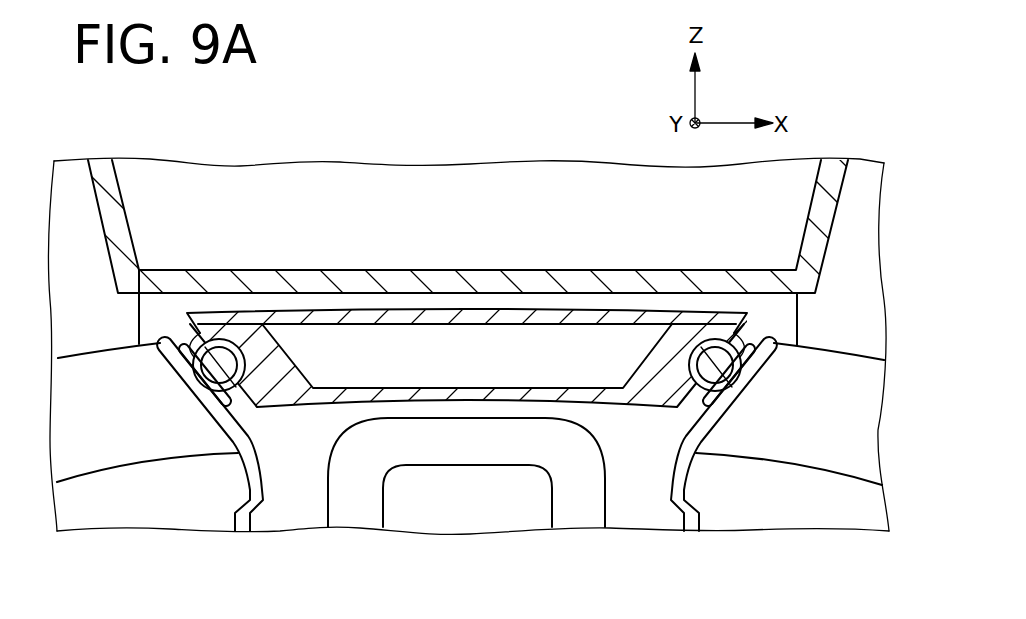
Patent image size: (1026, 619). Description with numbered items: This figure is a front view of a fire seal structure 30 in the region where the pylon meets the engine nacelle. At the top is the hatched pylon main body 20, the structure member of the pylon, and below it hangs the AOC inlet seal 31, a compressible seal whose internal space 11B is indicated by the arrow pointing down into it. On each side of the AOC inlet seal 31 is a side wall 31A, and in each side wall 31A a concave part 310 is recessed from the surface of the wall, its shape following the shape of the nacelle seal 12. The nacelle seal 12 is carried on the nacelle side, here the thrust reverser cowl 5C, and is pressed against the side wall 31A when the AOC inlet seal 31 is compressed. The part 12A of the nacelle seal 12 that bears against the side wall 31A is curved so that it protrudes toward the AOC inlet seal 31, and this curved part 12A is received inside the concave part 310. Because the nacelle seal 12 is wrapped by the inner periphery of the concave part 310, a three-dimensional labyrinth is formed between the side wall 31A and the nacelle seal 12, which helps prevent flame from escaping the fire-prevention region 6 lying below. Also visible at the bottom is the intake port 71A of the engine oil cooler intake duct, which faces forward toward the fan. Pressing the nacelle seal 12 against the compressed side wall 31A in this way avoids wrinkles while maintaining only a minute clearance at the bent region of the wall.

The pylon main body 20 is at (844, 198).
The AOC inlet seal 31 is at (614, 307).
The side wall 31A is at (188, 325).
The concave part 310 is at (195, 349).
The nacelle seal 12 is at (252, 407).
The part of the nacelle seal 12A is at (252, 364).
The internal space 11B is at (453, 358).
The fire seal structure 30 is at (189, 347).
The thrust reverser cowl 5C is at (175, 437).
The fire-prevention region 6 is at (632, 526).
The intake port 71A is at (548, 515).